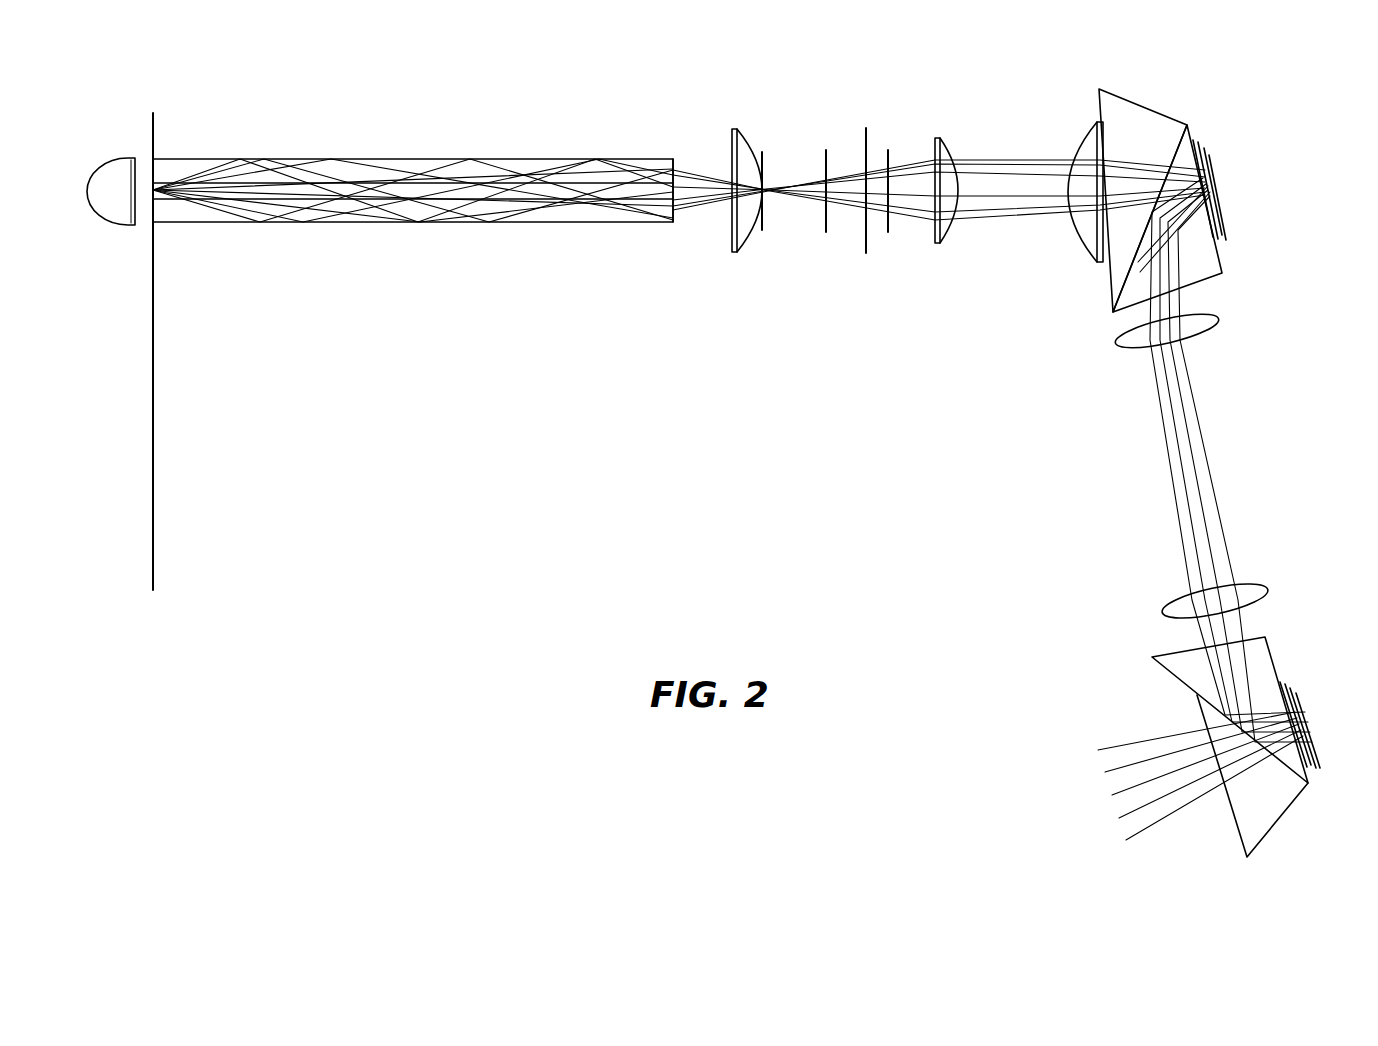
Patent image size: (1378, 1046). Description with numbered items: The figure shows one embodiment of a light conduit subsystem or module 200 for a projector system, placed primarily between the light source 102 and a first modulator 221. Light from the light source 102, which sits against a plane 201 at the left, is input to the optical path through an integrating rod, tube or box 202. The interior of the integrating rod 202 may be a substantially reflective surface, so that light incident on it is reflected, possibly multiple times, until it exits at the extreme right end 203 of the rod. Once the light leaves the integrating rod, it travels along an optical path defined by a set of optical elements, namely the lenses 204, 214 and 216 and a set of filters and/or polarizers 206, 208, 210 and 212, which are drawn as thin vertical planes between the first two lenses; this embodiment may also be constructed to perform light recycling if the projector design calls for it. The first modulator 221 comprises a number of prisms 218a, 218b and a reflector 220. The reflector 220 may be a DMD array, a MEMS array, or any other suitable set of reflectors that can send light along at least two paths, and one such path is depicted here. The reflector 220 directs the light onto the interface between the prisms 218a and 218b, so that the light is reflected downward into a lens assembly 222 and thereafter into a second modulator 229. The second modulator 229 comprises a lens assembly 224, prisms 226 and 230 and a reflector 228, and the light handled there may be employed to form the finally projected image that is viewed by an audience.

The light conduit subsystem/module 200 is at (403, 660).
The light source 102 is at (133, 157).
The light source plane 201 is at (155, 162).
The integrating rod/tube/box 202 is at (420, 158).
The extreme right end 203 is at (676, 225).
The lens 204 is at (738, 130).
The filter and/or polarizer 206 is at (764, 152).
The filter and/or polarizer 208 is at (827, 150).
The filter and/or polarizer 210 is at (870, 128).
The filter and/or polarizer 212 is at (889, 150).
The lens 214 is at (938, 138).
The lens 216 is at (1094, 122).
The prism 218a is at (1188, 124).
The prism 218b is at (1226, 255).
The reflector 220 is at (1216, 143).
The first modulator 221 is at (1222, 86).
The lens assembly 222 is at (1210, 320).
The lens assembly 224 is at (1245, 592).
The prism 226 is at (1260, 637).
The reflector 228 is at (1298, 690).
The second modulator 229 is at (1321, 635).
The prism 230 is at (1275, 830).